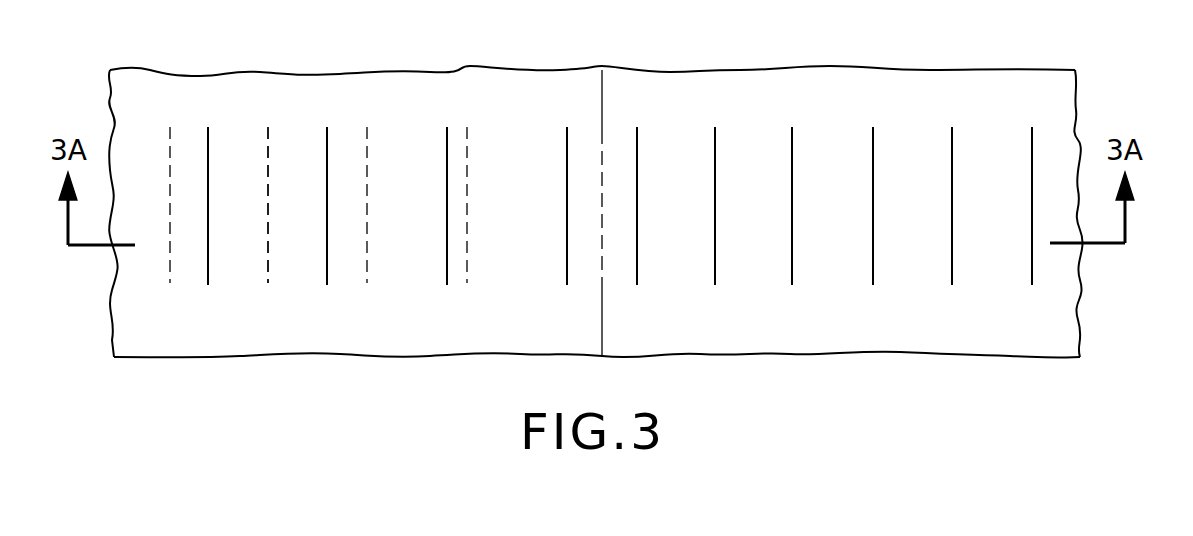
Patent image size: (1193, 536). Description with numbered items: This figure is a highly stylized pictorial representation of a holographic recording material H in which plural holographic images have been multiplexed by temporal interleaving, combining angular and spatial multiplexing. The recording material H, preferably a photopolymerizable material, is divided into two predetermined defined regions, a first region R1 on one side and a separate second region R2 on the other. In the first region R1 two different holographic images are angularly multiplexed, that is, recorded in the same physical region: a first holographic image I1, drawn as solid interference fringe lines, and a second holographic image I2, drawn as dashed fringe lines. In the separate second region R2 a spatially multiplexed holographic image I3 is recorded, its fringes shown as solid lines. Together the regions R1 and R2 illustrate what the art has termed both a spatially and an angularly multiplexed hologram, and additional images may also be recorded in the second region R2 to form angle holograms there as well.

The holographic recording material H is at (1092, 95).
The first predetermined defined region R1 is at (273, 88).
The second predetermined defined region R2 is at (965, 87).
The first holographic image I1 is at (195, 280).
The second holographic image I2 is at (258, 280).
The spatially multiplexed holographic image I3 is at (722, 268).